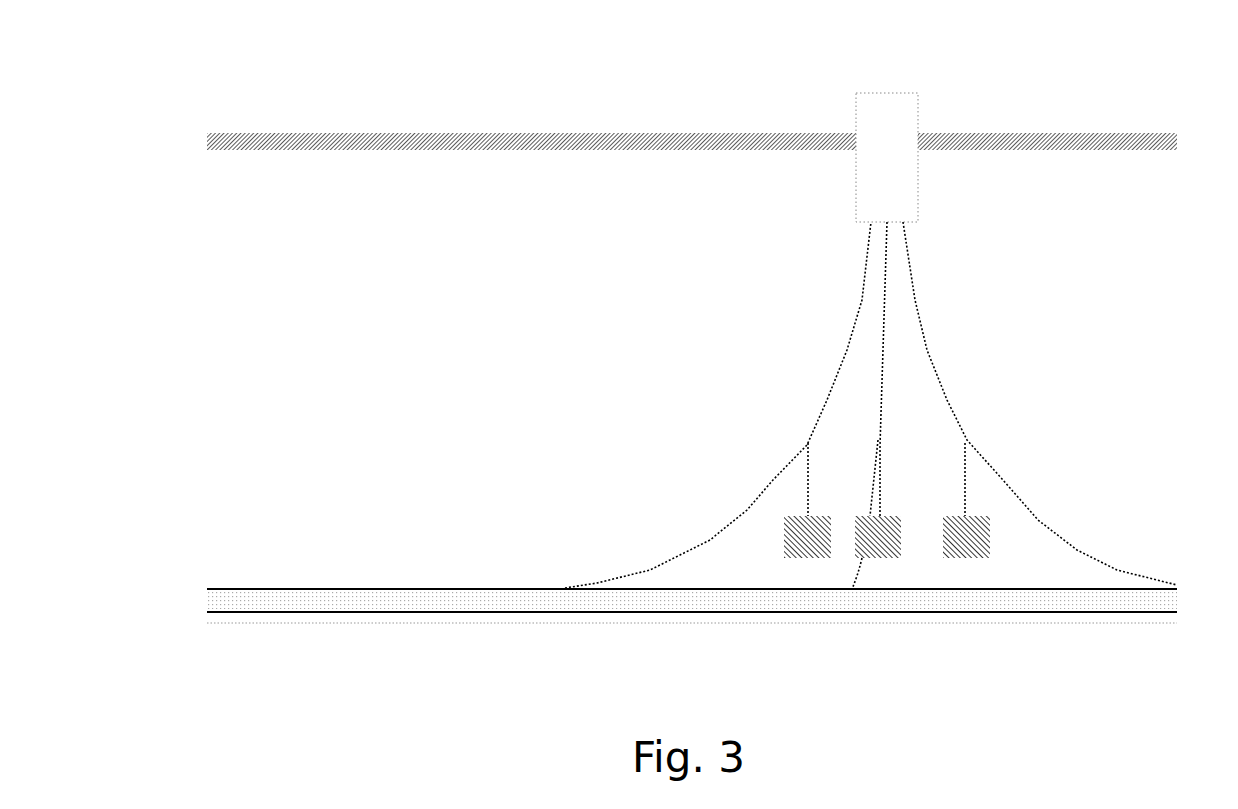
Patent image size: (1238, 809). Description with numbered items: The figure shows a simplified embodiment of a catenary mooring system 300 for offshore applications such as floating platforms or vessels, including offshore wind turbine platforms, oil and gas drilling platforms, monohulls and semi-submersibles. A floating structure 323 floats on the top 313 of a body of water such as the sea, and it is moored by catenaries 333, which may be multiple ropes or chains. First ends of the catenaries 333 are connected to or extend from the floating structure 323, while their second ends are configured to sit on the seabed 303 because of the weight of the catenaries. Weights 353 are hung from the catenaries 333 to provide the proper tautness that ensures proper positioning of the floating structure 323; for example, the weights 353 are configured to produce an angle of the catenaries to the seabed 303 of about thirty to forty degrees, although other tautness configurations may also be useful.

The catenary mooring system 300 is at (675, 696).
The seabed 303 is at (255, 587).
The top of a body of water 313 is at (255, 125).
The coupler element 323 is at (892, 88).
The catenaries 333 is at (928, 350).
The weights 353 is at (975, 551).